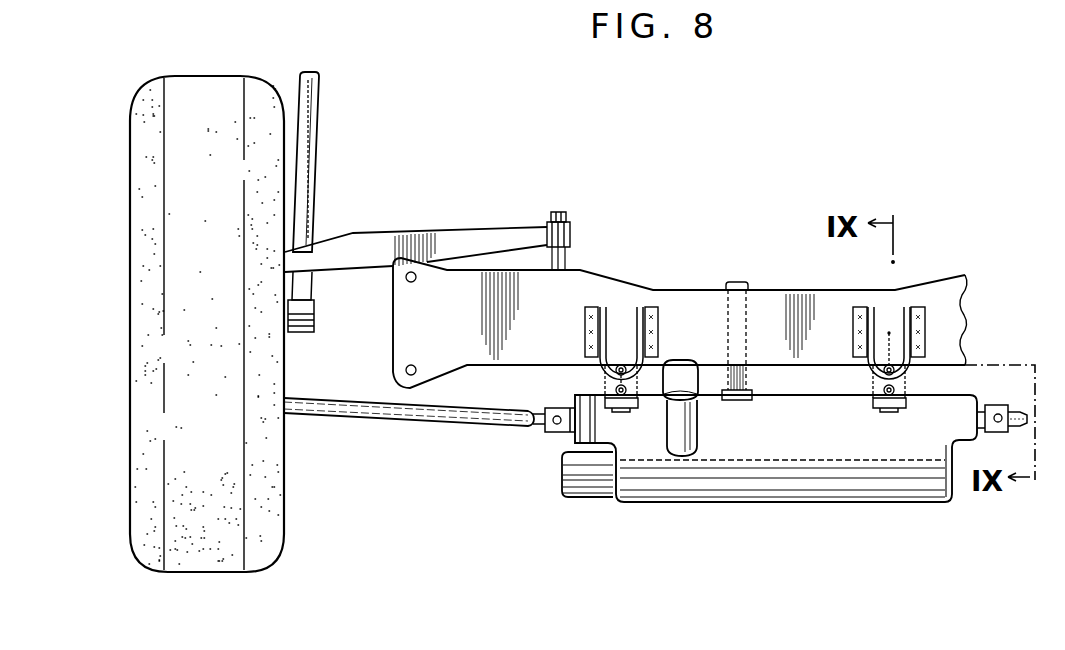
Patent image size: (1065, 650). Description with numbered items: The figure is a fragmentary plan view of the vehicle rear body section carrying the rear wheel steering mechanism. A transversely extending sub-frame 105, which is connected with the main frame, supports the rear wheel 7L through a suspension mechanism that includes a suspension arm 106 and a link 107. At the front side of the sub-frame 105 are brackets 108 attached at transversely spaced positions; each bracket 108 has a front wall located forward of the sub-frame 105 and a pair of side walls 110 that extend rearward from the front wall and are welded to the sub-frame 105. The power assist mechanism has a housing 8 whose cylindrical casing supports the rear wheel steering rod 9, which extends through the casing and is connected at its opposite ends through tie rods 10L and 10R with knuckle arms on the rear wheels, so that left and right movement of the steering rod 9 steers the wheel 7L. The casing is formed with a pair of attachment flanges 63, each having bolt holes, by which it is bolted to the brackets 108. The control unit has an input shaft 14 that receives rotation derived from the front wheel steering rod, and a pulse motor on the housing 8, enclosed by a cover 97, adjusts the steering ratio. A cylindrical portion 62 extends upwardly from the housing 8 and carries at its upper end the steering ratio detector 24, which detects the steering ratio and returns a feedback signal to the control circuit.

The rear wheel 7L is at (268, 522).
The housing 8 is at (790, 503).
The rear wheel steering rod 9 is at (574, 408).
The tie rod 10L is at (415, 410).
The tie rod 10R is at (1018, 428).
The input shaft 14 is at (748, 383).
The steering ratio detector 24 is at (683, 372).
The cylindrical portion 62 is at (690, 441).
The attachment flange 63 is at (628, 410).
The cover 97 is at (583, 482).
The sub-frame 105 is at (624, 290).
The suspension arm 106 is at (474, 238).
The link 107 is at (305, 124).
The bracket 108 is at (578, 342).
The side wall 110 is at (583, 318).